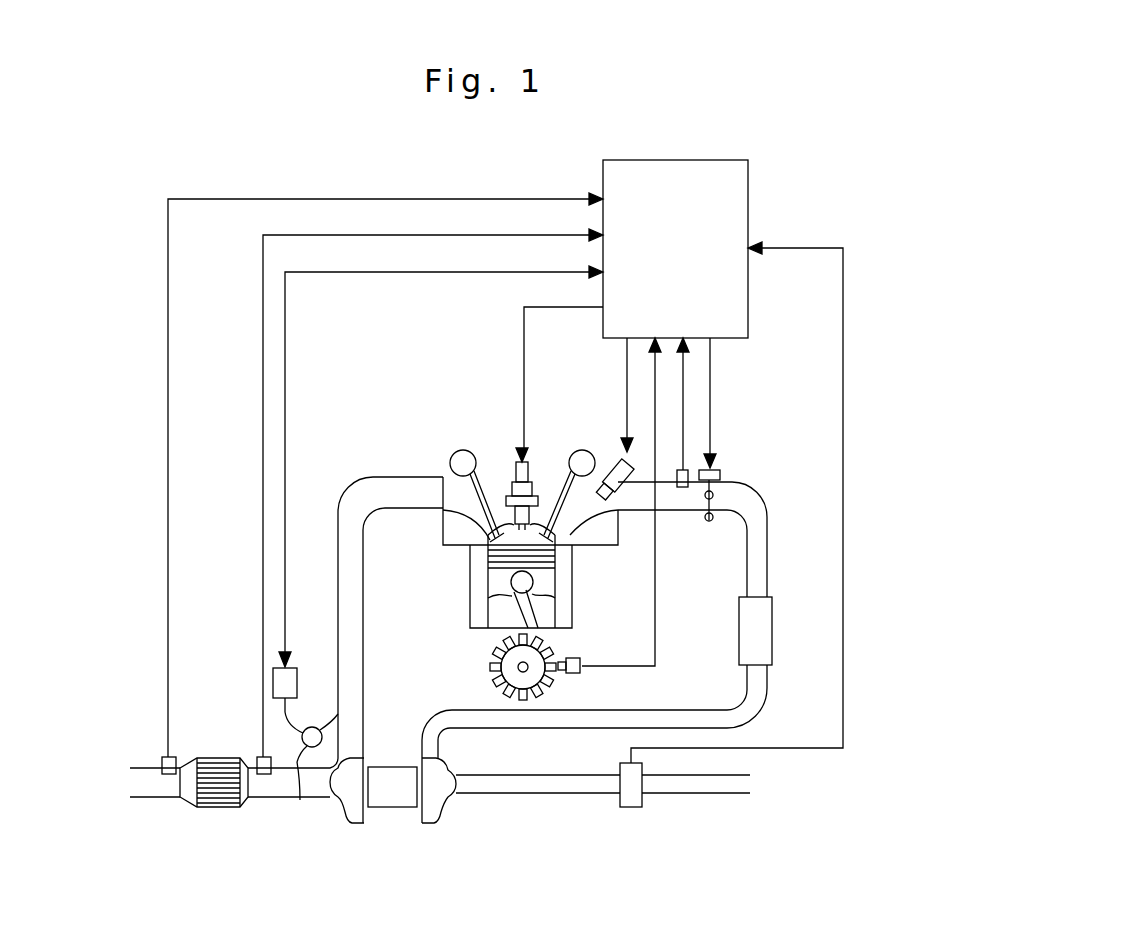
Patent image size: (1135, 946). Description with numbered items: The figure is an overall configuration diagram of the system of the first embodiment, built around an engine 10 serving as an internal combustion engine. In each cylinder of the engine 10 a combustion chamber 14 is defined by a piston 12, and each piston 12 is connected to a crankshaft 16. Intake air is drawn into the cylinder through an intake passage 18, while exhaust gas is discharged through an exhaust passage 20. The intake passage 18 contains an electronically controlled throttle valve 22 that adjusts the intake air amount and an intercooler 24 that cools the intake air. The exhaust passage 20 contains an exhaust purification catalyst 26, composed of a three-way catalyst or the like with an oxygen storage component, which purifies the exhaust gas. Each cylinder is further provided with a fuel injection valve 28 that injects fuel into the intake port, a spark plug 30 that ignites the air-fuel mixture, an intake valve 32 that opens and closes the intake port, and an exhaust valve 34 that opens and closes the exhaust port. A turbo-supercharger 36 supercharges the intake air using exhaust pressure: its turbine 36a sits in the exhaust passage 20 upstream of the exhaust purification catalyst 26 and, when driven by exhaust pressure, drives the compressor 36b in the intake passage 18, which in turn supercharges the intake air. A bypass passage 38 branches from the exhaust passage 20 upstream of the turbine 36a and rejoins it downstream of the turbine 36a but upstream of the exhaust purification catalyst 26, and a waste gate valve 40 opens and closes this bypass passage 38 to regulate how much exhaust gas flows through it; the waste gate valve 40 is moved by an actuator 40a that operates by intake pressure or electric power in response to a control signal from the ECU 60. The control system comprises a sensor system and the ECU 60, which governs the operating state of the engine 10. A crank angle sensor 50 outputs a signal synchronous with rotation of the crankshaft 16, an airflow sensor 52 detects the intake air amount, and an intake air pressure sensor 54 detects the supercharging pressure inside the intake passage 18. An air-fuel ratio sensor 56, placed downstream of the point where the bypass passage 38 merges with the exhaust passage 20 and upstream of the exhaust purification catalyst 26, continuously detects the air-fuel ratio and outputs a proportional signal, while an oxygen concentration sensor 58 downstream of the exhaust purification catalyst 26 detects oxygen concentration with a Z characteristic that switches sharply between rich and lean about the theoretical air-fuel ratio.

The engine 10 is at (458, 584).
The piston 12 is at (497, 592).
The combustion chamber 14 is at (478, 546).
The crankshaft 16 is at (518, 668).
The intake passage 18 is at (762, 548).
The exhaust passage 20 is at (368, 503).
The throttle valve 22 is at (728, 483).
The intercooler 24 is at (760, 634).
The exhaust purification catalyst 26 is at (219, 807).
The fuel injection valve 28 is at (613, 470).
The spark plug 30 is at (514, 480).
The intake valve 32 is at (571, 452).
The exhaust valve 34 is at (465, 450).
The turbo-supercharger 36 is at (411, 836).
The turbine 36a is at (341, 823).
The compressor 36b is at (450, 823).
The bypass passage 38 is at (299, 801).
The waste gate valve 40 is at (314, 727).
The actuator 40a is at (298, 668).
The crank angle sensor 50 is at (576, 658).
The airflow sensor 52 is at (631, 807).
The intake air pressure sensor 54 is at (682, 487).
The air-fuel ratio sensor 56 is at (260, 757).
The oxygen concentration sensor 58 is at (164, 757).
The ECU 60 is at (677, 160).